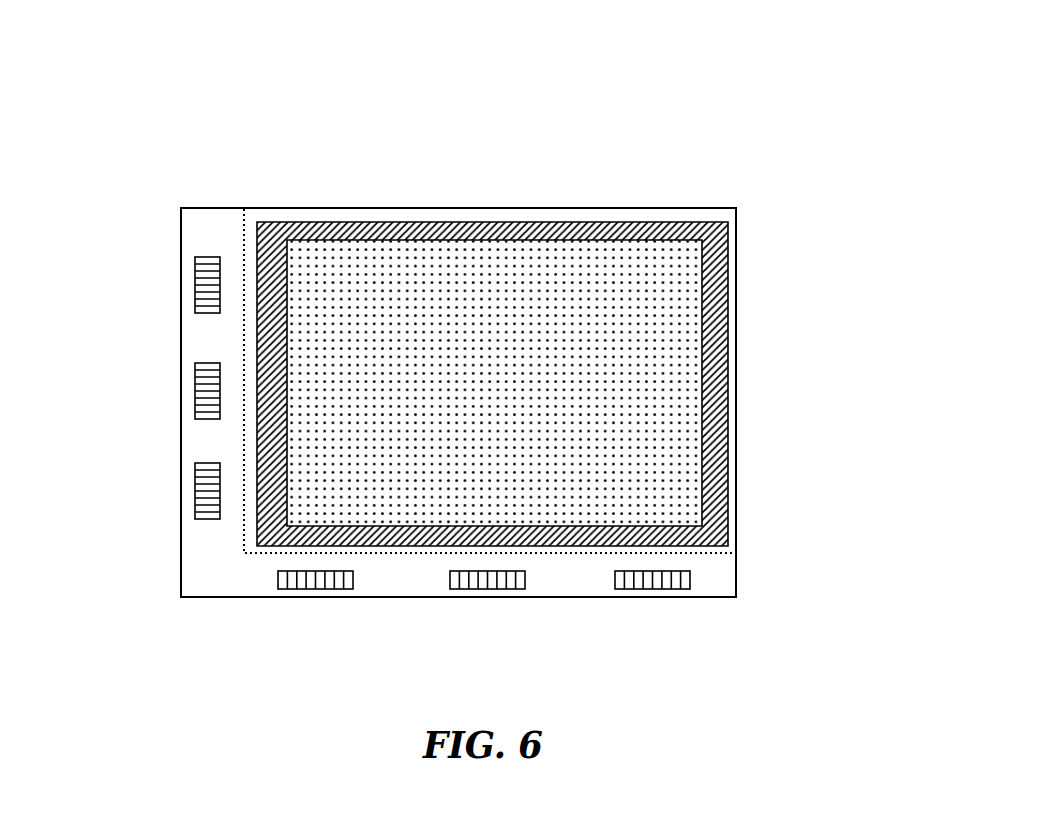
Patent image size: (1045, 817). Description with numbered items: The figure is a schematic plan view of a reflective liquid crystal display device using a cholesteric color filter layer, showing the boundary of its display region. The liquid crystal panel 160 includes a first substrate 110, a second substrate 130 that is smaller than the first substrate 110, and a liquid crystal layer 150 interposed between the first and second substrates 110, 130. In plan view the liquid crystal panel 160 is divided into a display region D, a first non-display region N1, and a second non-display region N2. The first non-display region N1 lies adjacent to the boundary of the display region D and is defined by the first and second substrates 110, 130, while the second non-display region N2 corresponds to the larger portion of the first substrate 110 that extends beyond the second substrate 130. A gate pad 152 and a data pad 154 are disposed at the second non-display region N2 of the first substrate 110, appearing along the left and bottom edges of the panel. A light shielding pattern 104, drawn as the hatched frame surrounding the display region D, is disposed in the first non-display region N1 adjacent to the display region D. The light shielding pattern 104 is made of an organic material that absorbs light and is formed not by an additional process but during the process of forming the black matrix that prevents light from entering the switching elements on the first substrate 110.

The liquid crystal panel 160 is at (755, 132).
The first substrate 110 is at (738, 581).
The second substrate 130 is at (738, 498).
The light shielding pattern 104 is at (620, 228).
The liquid crystal layer 150 is at (678, 372).
The gate pad 152 is at (205, 282).
The data pad 154 is at (314, 580).
The first non-display region N1 is at (513, 215).
The second non-display region N2 is at (222, 222).
The display region D is at (480, 257).